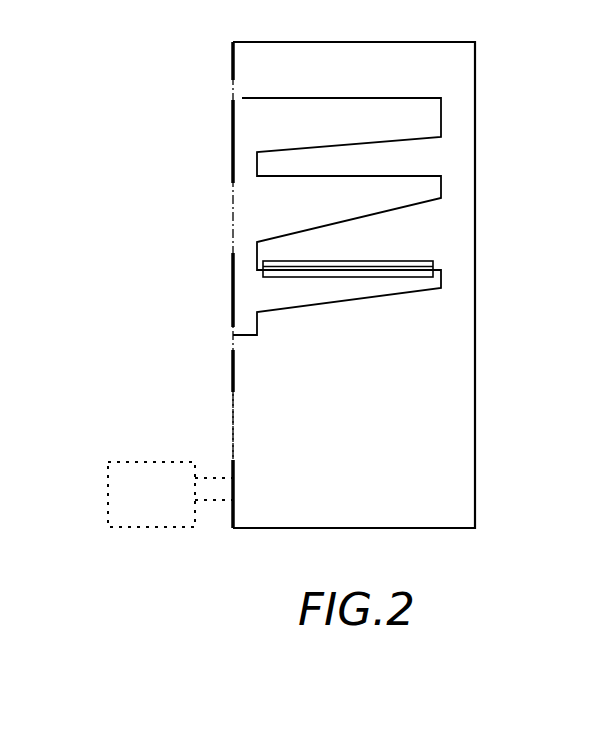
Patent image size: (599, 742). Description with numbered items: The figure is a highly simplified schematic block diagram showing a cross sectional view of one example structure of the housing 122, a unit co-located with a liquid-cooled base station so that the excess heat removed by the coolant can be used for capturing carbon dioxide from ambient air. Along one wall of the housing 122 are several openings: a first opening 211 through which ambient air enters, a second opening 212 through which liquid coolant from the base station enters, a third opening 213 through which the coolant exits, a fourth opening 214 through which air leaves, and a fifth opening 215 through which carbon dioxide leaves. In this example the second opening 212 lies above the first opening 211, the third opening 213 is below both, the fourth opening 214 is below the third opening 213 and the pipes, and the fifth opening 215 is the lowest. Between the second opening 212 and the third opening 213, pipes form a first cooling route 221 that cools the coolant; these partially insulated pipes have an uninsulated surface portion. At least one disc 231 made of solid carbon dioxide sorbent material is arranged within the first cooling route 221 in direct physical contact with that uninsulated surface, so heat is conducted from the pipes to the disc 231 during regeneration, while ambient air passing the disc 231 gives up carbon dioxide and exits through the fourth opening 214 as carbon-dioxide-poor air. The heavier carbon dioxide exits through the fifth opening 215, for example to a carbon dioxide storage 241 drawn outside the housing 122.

The housing 122 is at (478, 167).
The first opening 211 is at (229, 215).
The second opening 212 is at (223, 96).
The third opening 213 is at (229, 337).
The fourth opening 214 is at (237, 430).
The fifth opening 215 is at (237, 491).
The first cooling route 221 is at (363, 95).
The disc 231 is at (380, 260).
The carbon dioxide storage 241 is at (107, 477).